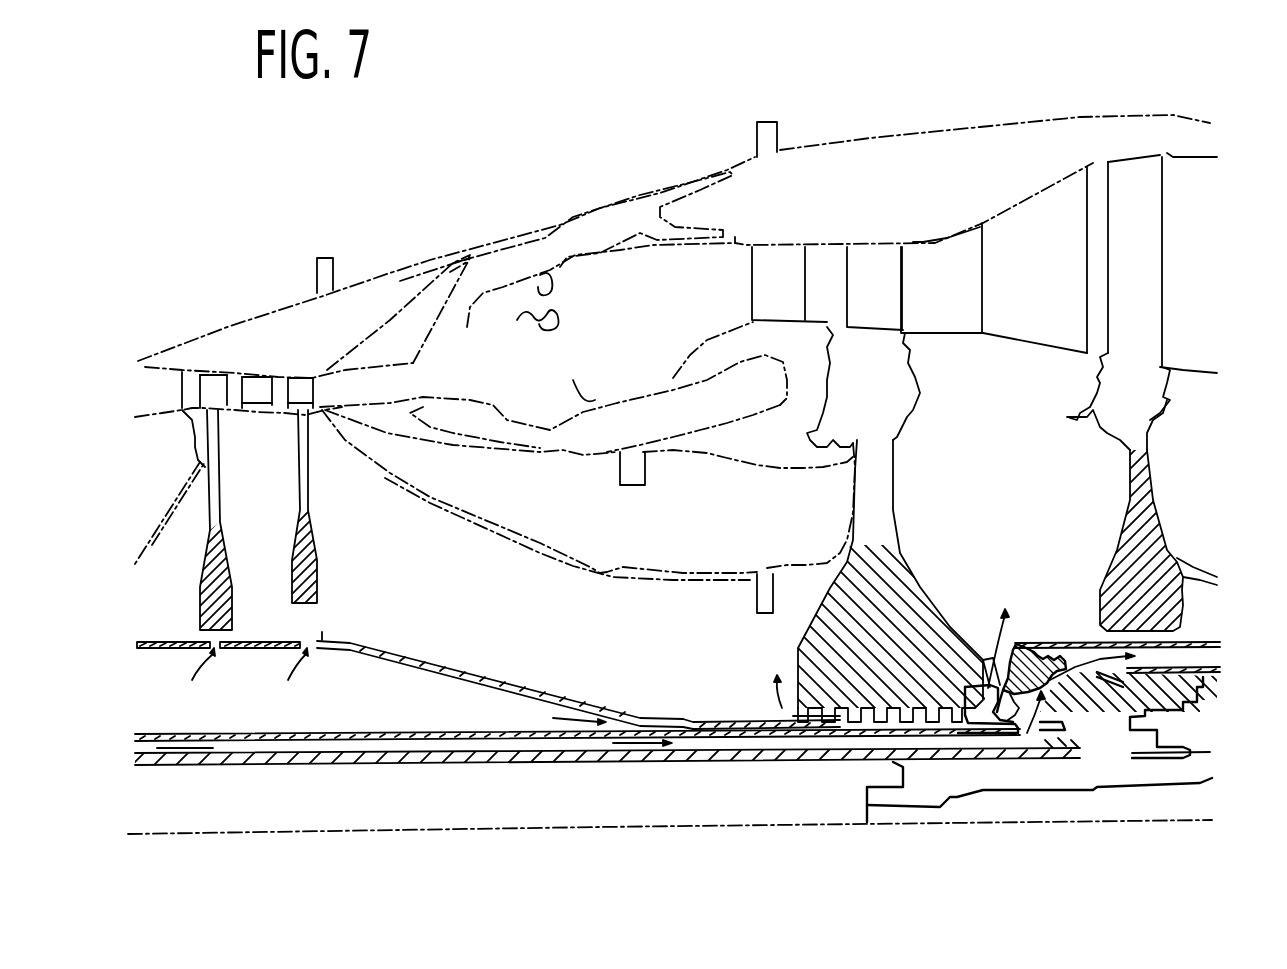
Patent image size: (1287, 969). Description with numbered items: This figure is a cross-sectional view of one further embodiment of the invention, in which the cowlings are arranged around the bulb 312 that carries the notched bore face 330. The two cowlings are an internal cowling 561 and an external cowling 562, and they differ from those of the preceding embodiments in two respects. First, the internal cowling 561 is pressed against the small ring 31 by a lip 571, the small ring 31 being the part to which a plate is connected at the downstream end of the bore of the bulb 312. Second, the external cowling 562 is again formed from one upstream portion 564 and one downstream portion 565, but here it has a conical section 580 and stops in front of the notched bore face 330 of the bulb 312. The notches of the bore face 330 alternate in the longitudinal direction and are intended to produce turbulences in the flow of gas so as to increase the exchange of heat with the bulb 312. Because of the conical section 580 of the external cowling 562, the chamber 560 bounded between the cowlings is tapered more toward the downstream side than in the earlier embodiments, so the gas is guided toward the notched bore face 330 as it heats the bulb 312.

The small ring 31 is at (1001, 700).
The bulb 312 is at (870, 620).
The notched bore face 330 is at (870, 713).
The chamber 560 is at (222, 679).
The internal cowling 561 is at (383, 735).
The external cowling 562 is at (398, 619).
The upstream portion 564 is at (262, 640).
The downstream portion 565 is at (750, 717).
The lip 571 is at (970, 723).
The conical section 580 is at (520, 653).